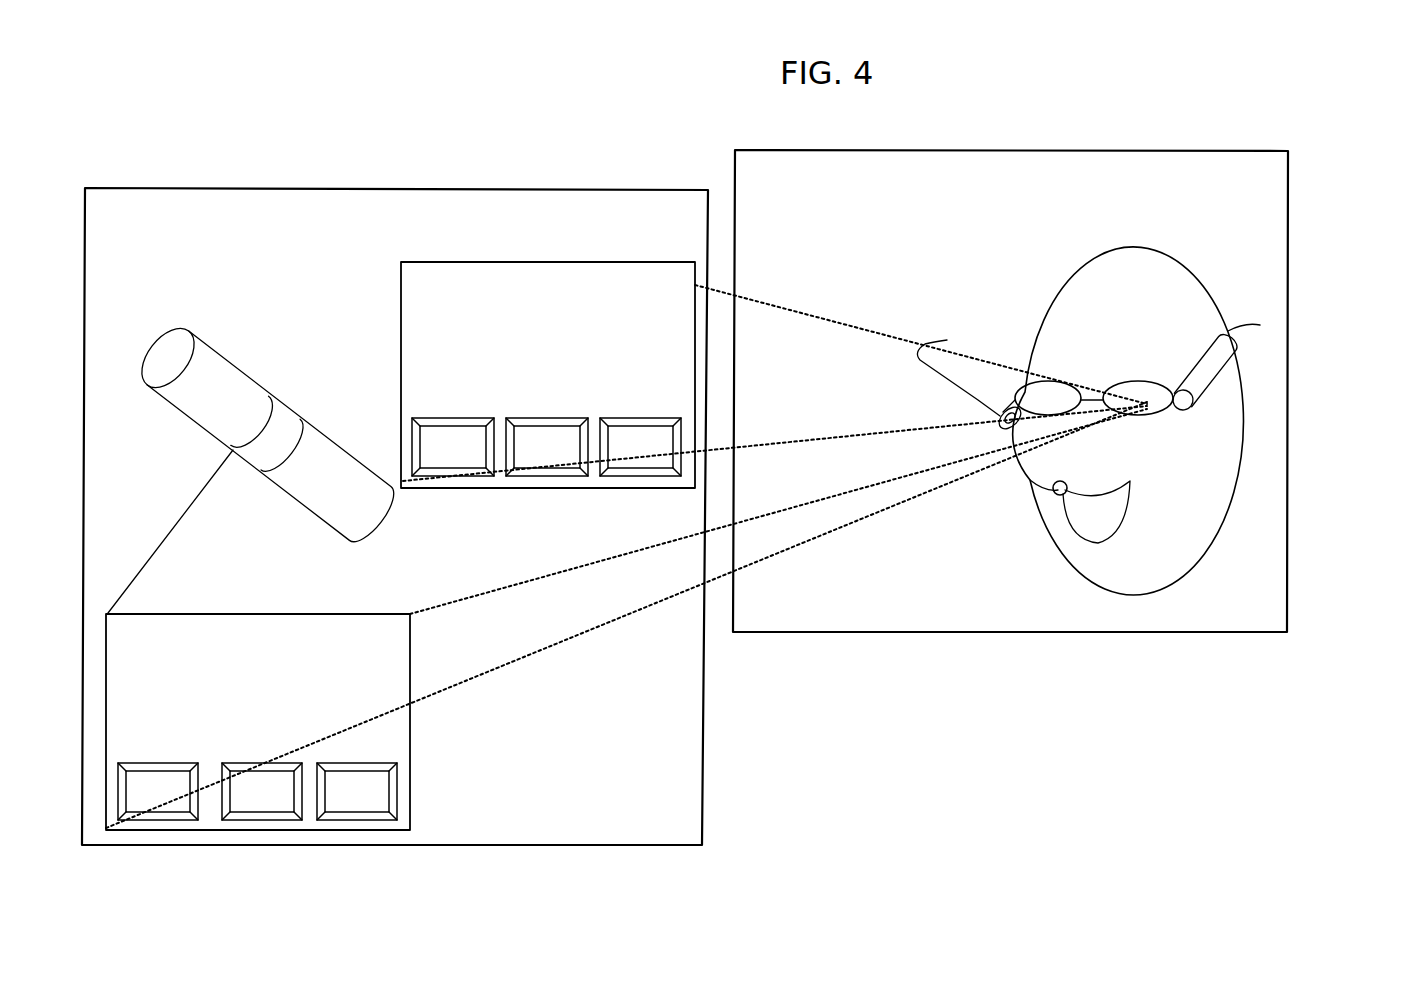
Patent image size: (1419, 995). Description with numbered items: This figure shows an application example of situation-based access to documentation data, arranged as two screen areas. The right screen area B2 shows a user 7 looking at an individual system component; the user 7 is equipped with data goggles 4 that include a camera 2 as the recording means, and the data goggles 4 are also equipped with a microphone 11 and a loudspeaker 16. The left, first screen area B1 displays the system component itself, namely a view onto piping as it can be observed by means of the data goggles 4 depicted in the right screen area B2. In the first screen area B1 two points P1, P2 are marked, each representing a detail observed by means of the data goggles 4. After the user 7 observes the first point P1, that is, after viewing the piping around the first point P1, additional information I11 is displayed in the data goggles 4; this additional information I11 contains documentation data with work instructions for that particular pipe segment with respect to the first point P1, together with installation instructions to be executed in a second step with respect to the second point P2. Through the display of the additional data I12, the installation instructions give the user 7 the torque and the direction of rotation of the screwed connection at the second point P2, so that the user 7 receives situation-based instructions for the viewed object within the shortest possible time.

The first screen area B1 is at (360, 164).
The right screen area B2 is at (1086, 144).
The first point P1 is at (202, 378).
The second point P2 is at (280, 425).
The additional data I12 is at (562, 283).
The additional information I11 is at (383, 735).
The data goggles 4 is at (1123, 393).
The loudspeaker 16 is at (947, 340).
The user 7 is at (1213, 284).
The camera 2 is at (1223, 347).
The microphone 11 is at (1053, 494).